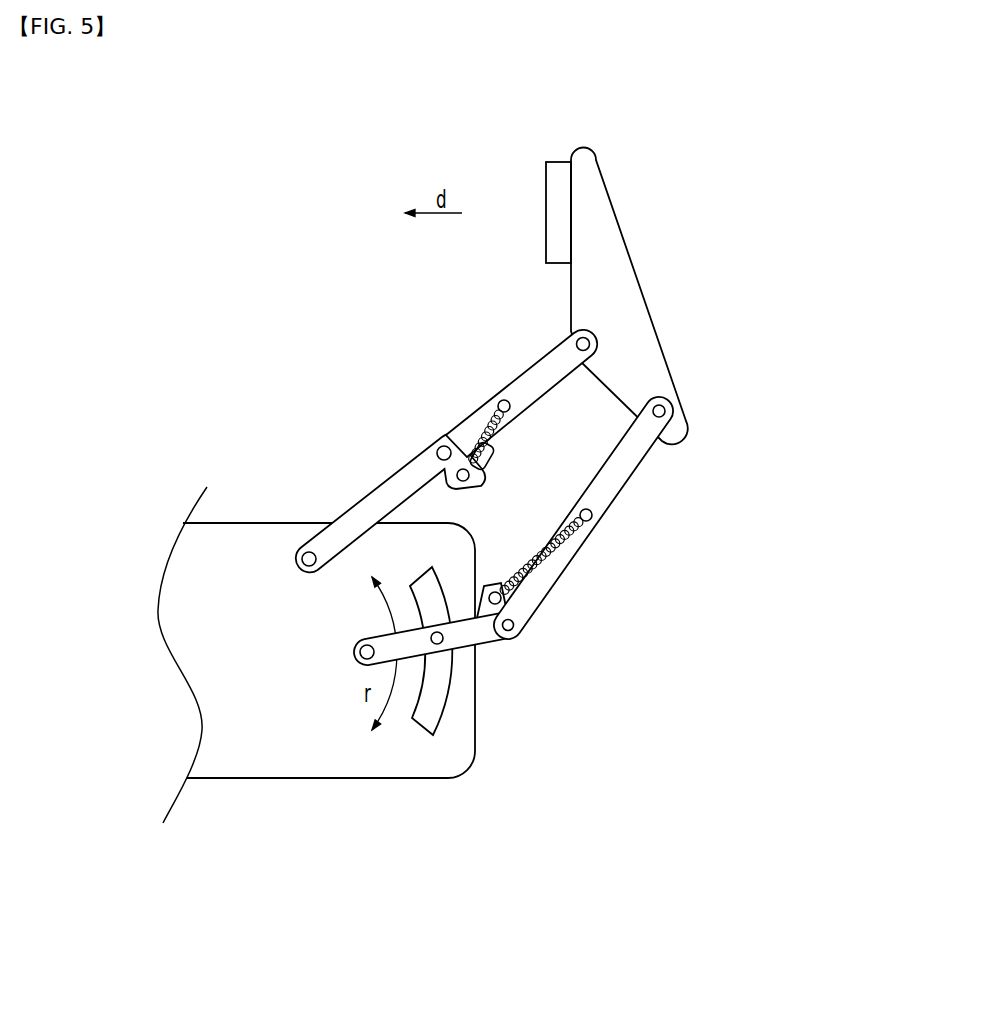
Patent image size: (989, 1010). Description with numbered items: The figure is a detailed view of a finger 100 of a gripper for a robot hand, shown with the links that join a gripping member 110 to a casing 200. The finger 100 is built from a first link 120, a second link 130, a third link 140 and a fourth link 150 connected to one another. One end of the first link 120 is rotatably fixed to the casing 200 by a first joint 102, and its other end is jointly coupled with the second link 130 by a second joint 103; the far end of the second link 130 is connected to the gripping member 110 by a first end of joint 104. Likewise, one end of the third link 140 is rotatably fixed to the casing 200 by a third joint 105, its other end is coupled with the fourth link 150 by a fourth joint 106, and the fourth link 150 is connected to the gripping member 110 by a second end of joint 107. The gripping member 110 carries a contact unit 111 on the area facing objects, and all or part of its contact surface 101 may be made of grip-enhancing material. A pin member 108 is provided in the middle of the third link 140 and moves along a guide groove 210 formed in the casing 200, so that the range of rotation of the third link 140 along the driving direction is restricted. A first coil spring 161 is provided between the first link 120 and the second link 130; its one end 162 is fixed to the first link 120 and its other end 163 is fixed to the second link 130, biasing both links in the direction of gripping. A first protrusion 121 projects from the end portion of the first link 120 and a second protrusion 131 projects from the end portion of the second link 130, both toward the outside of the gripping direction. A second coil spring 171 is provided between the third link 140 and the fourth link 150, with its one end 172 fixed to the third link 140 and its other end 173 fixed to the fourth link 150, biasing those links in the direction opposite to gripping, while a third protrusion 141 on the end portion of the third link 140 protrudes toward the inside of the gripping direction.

The finger 100 is at (653, 276).
The contact surface 101 is at (515, 188).
The first joint 102 is at (306, 546).
The second joint 103 is at (437, 447).
The first end of joint 104 is at (573, 338).
The third joint 105 is at (362, 665).
The fourth joint 106 is at (516, 626).
The second end of joint 107 is at (668, 411).
The pin member 108 is at (442, 643).
The gripping member 110 is at (633, 335).
The contact unit 111 is at (559, 175).
The first link 120 is at (402, 498).
The first protrusion 121 is at (482, 491).
The second link 130 is at (497, 396).
The second protrusion 131 is at (496, 461).
The third link 140 is at (478, 633).
The third protrusion 141 is at (479, 590).
The fourth link 150 is at (644, 463).
The first coil spring 161 is at (500, 426).
The one end of the first coil spring 162 is at (478, 482).
The other end of the first coil spring 163 is at (493, 400).
The second coil spring 171 is at (558, 543).
The one end of the second coil spring 172 is at (503, 599).
The other end of the second coil spring 173 is at (593, 512).
The casing 200 is at (293, 780).
The guide groove 210 is at (437, 700).